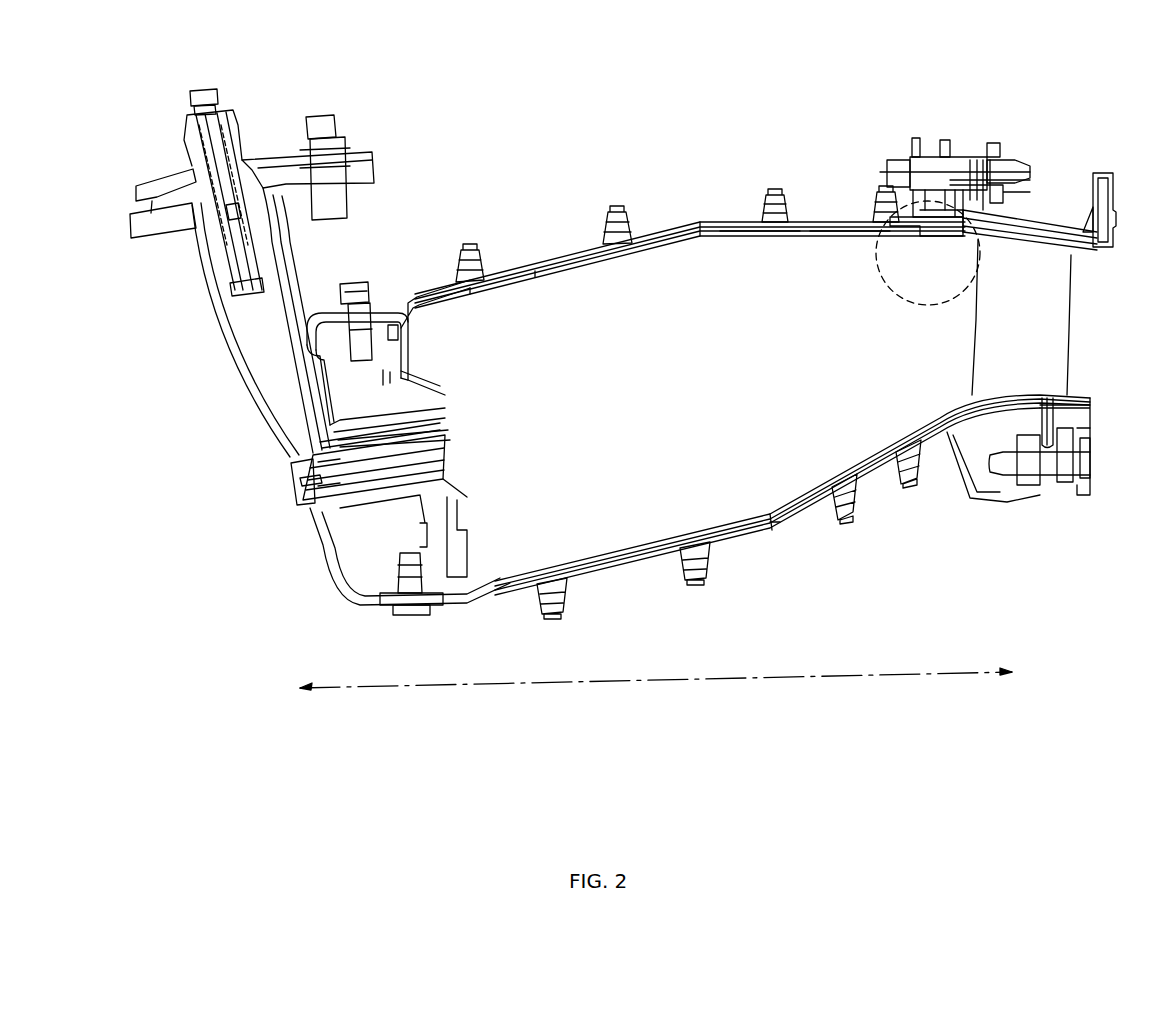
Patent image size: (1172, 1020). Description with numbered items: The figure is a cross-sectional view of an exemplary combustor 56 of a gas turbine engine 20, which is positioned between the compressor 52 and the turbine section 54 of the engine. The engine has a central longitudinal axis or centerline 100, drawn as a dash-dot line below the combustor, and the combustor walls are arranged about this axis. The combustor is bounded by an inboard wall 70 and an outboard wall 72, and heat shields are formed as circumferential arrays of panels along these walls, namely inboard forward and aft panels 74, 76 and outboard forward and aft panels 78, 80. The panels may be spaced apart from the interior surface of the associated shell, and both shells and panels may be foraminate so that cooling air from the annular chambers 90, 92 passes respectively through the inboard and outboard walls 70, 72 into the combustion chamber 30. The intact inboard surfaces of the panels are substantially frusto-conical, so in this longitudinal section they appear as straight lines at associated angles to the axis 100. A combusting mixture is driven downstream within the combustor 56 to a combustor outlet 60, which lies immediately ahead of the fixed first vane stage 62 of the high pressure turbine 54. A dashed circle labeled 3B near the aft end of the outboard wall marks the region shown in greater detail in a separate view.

The gas turbine engine 20 is at (345, 80).
The combustion chamber 30 is at (650, 402).
The compressor 52 is at (195, 496).
The turbine section 54 is at (963, 352).
The combustor 56 is at (678, 190).
The combustor outlet 60 is at (958, 331).
The fixed first vane stage 62 is at (1057, 338).
The inboard wall 70 is at (636, 530).
The outboard wall 72 is at (628, 262).
The inboard forward panel 74 is at (576, 556).
The inboard aft panel 76 is at (795, 490).
The outboard forward panel 78 is at (548, 282).
The outboard aft panel 80 is at (797, 240).
The annular chamber 90 is at (663, 618).
The annular chamber 92 is at (558, 222).
The central longitudinal axis 100 is at (845, 677).
The detail view region 3B is at (882, 298).